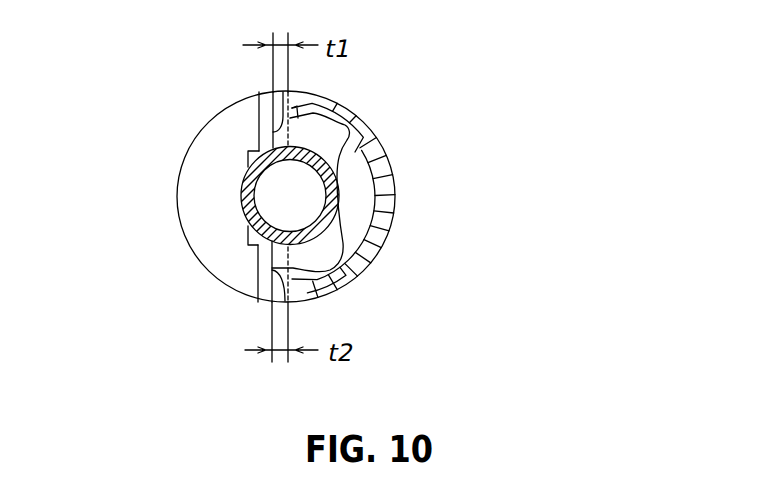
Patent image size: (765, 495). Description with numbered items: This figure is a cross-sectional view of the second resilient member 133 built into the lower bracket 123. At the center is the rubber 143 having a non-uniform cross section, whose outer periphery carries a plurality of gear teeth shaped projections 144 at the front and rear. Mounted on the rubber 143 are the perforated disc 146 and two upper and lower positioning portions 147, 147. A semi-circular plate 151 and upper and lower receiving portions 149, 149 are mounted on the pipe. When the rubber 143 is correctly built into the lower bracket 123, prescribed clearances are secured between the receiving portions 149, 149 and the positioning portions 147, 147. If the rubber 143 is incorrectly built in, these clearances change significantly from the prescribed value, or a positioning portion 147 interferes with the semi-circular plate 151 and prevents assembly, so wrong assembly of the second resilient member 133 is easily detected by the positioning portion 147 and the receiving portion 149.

The lower bracket 123 is at (417, 275).
The second resilient member 133 is at (388, 113).
The rubber having a non-uniform cross section 143 is at (384, 131).
The gear teeth shaped projections 144 is at (378, 155).
The perforated disc 146 is at (347, 203).
The positioning portion 147 is at (321, 96).
The receiving portion 149 is at (273, 90).
The semi-circular plate 151 is at (197, 199).